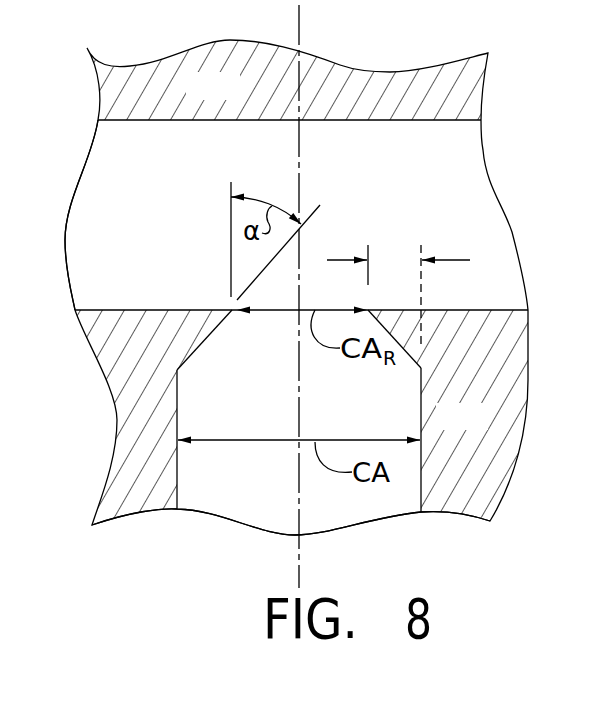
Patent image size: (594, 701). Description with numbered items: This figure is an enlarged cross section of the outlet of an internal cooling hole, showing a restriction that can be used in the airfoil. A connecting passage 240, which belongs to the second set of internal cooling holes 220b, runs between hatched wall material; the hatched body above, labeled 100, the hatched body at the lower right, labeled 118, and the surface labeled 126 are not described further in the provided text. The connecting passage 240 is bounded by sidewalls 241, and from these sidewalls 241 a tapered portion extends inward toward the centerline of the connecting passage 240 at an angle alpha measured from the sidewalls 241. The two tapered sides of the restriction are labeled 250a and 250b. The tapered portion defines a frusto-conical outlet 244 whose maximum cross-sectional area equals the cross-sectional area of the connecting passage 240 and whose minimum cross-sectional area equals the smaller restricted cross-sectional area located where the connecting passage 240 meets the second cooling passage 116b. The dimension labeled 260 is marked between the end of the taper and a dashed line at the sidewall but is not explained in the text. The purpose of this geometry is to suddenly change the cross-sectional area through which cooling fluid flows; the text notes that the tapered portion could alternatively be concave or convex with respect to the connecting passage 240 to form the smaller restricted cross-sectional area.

The gas turbine engine component wall 100 is at (238, 98).
The second cooling passage 116b is at (160, 178).
The inner surface 126 is at (355, 122).
The frusto-conical outlet 244 is at (305, 290).
The first chamfered edge 250a is at (194, 330).
The second chamfered edge 250b is at (406, 312).
The chamfer width 260 is at (462, 259).
The connecting passage 240 is at (272, 387).
The second wall 118 is at (485, 428).
The sidewalls 241 is at (421, 480).
The second set of internal cooling holes 220b is at (237, 500).